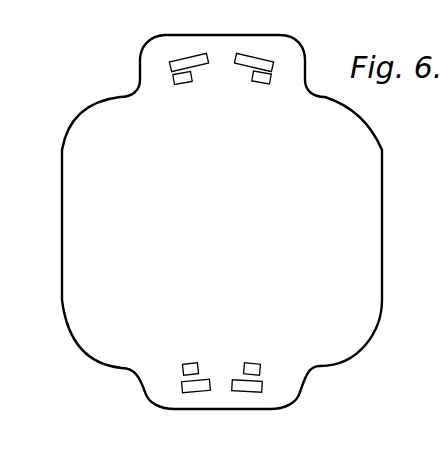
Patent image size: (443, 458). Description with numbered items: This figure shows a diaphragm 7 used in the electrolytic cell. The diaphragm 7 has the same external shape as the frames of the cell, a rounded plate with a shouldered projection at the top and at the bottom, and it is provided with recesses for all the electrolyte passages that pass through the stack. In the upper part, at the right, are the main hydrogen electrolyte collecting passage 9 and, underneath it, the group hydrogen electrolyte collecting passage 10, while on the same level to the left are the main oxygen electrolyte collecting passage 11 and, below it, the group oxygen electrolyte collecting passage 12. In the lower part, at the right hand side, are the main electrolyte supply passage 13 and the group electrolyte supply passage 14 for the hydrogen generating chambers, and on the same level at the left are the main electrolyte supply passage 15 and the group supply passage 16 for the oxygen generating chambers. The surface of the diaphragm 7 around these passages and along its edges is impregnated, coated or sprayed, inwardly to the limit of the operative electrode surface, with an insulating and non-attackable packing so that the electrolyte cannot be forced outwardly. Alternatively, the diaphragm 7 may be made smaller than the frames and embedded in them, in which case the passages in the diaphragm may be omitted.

The diaphragm 7 is at (75, 226).
The main hydrogen electrolyte collecting passage 9 is at (256, 60).
The group hydrogen electrolyte collecting passage 10 is at (262, 83).
The main oxygen electrolyte collecting passage 11 is at (182, 66).
The group oxygen electrolyte collecting passage 12 is at (180, 83).
The main electrolyte supply passage 13 is at (247, 388).
The group electrolyte supply passage 14 is at (258, 368).
The main electrolyte supply passage 15 is at (188, 387).
The group supply passage 16 is at (183, 367).